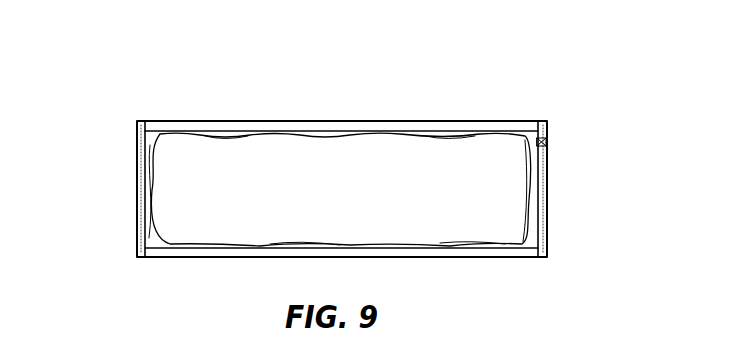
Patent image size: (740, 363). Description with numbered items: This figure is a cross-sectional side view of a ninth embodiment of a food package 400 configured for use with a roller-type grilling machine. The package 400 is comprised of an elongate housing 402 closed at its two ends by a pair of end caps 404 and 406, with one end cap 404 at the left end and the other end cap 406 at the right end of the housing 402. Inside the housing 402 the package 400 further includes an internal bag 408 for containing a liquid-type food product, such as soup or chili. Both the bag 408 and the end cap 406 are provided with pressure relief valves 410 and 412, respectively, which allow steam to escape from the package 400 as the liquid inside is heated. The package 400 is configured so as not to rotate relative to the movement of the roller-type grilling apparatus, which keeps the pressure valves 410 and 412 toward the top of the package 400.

The package 400 is at (346, 141).
The elongate housing 402 is at (278, 121).
The end cap 404 is at (137, 215).
The end cap 406 is at (548, 200).
The internal bag 408 is at (216, 134).
The pressure relief valve 410 is at (525, 140).
The pressure relief valve 412 is at (547, 142).